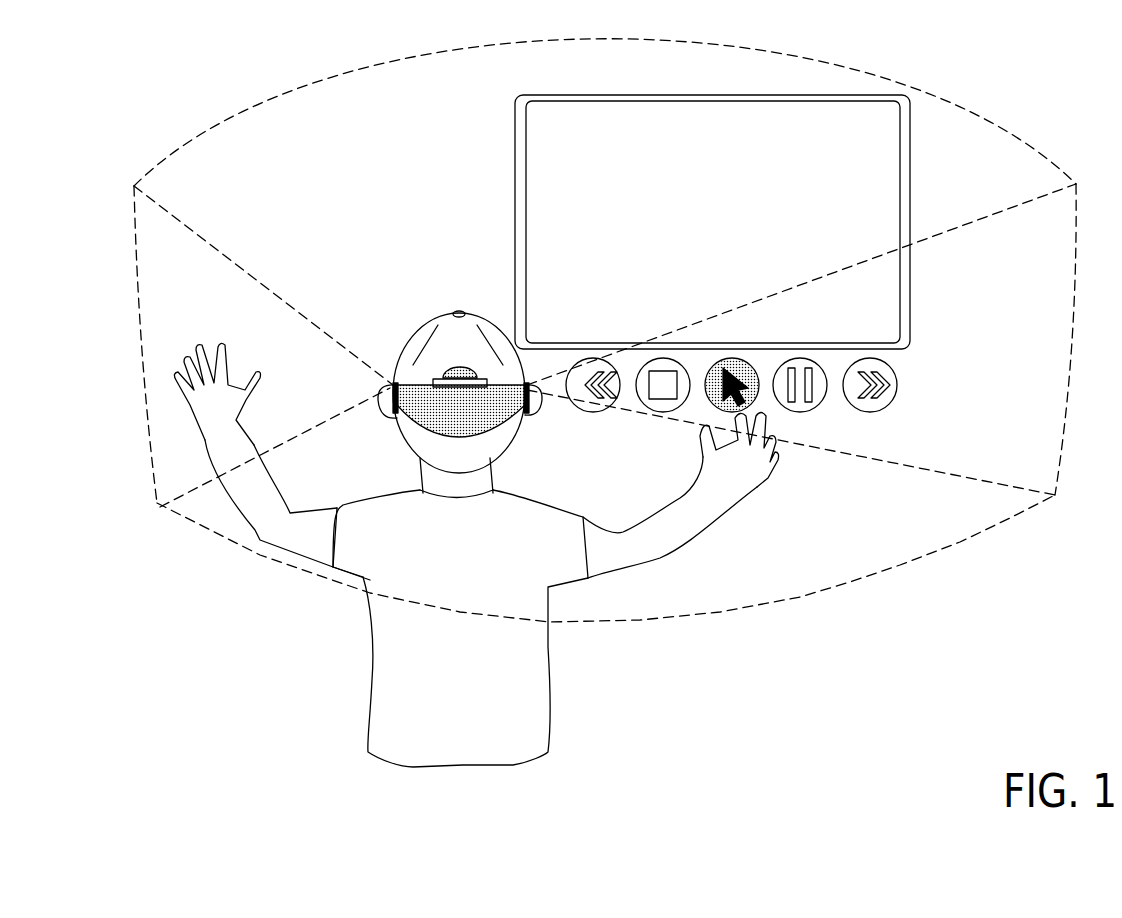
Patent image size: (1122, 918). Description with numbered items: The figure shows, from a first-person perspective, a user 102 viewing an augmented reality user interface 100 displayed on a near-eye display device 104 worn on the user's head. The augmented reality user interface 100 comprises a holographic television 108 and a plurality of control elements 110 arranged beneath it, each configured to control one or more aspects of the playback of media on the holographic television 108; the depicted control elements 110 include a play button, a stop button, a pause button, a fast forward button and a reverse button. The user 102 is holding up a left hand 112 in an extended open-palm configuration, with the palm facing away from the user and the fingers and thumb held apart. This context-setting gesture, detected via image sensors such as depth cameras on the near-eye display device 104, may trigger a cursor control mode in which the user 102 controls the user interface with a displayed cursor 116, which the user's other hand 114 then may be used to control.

The augmented reality user interface 100 is at (777, 50).
The user 102 is at (536, 692).
The near-eye display device 104 is at (391, 383).
The holographic television 108 is at (883, 329).
The control elements 110 is at (895, 366).
The left hand 112 is at (224, 350).
The right hand 114 is at (748, 470).
The cursor 116 is at (735, 388).